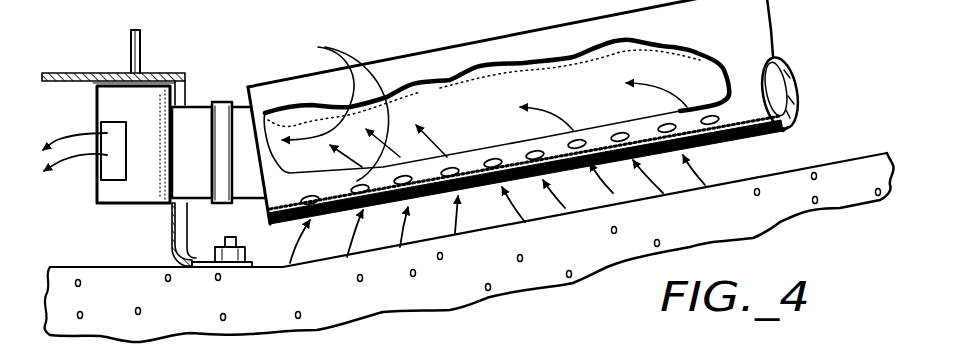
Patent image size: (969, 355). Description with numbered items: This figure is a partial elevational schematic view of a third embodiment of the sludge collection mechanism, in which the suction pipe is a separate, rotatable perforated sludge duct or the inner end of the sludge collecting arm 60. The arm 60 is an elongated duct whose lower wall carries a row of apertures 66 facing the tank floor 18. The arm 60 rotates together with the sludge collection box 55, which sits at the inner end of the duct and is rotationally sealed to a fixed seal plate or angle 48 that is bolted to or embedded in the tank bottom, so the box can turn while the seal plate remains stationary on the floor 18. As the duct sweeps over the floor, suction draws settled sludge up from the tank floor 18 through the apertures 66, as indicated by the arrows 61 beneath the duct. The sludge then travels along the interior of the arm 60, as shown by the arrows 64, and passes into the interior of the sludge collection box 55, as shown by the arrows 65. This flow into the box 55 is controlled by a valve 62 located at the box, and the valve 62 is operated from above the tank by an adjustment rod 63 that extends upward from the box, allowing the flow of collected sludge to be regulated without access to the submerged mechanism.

The tank floor 18 is at (800, 168).
The fixed seal plate or angle 48 is at (186, 262).
The sludge collection box 55 is at (178, 72).
The arm 60 is at (490, 40).
The arrows 61 is at (702, 178).
The valve 62 is at (97, 104).
The adjustment rod 63 is at (142, 62).
The arrows 64 is at (320, 47).
The arrows 65 is at (80, 140).
The apertures 66 is at (636, 125).